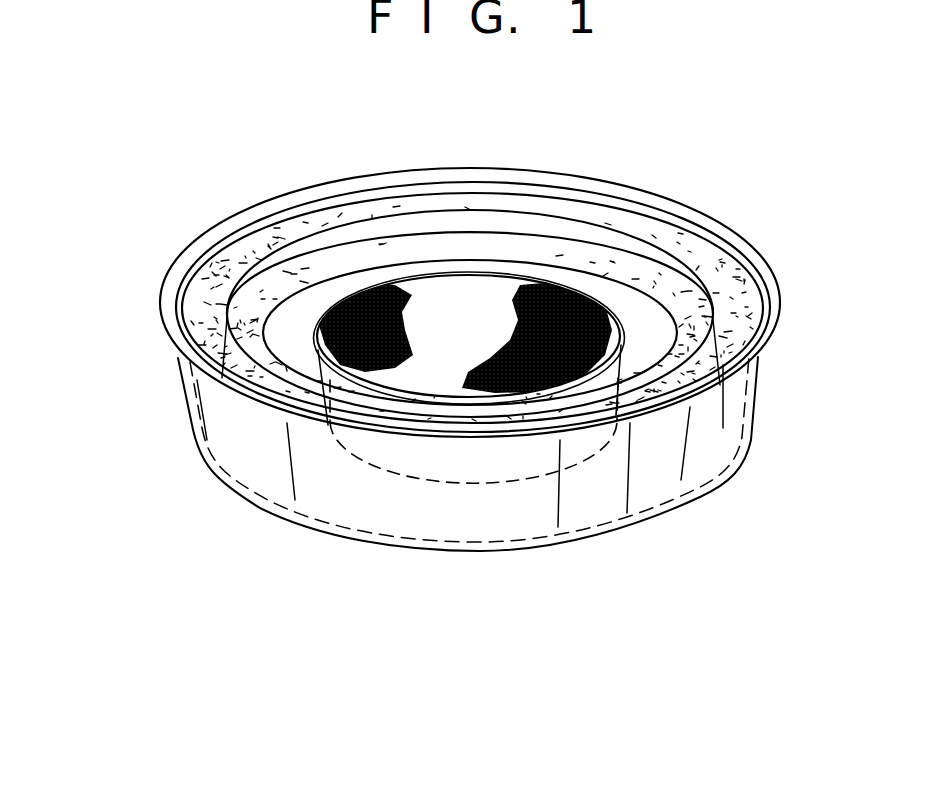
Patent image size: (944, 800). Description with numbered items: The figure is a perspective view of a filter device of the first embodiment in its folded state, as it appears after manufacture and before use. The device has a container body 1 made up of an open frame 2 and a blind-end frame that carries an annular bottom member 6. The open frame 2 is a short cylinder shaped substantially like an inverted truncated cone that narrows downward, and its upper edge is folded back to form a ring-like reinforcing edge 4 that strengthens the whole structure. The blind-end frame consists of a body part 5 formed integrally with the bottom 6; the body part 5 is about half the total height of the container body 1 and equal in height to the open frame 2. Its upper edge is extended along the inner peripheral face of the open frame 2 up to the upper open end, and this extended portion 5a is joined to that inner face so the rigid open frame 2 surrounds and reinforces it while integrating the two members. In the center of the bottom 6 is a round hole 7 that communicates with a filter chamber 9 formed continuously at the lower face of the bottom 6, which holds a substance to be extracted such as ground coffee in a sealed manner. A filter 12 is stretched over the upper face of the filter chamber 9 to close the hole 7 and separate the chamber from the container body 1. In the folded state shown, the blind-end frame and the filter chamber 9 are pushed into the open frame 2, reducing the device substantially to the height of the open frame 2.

The container body 1 is at (165, 421).
The open frame 2 is at (667, 470).
The ring-like reinforcing edge 4 is at (748, 235).
The body part 5 is at (712, 372).
The extended portion 5a is at (301, 212).
The annular bottom member 6 is at (368, 228).
The round hole 7 is at (471, 245).
The filter chamber 9 is at (524, 490).
The filter 12 is at (512, 290).